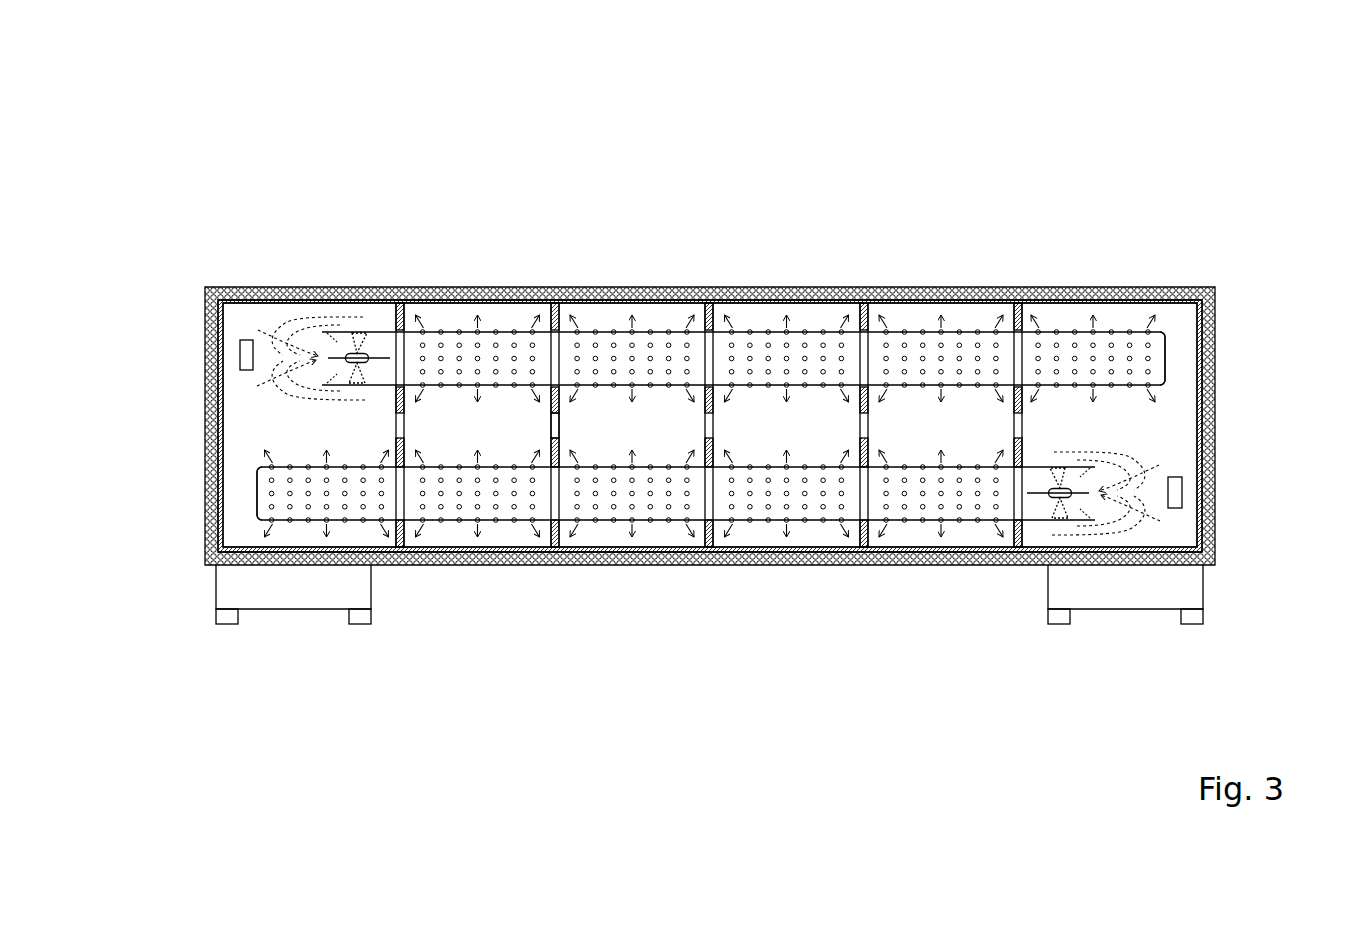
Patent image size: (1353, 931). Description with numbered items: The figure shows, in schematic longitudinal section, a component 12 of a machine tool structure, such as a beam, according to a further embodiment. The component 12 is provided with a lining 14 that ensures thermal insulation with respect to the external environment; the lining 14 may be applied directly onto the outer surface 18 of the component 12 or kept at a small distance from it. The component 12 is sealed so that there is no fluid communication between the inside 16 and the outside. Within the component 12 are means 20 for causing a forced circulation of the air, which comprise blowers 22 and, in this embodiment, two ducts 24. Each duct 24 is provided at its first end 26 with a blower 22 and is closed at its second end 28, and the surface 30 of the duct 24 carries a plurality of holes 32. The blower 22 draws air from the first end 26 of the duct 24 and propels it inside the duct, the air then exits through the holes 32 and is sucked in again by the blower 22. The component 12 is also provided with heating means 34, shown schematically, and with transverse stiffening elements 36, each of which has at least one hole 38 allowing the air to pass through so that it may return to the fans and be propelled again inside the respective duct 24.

The component 12 is at (632, 252).
The lining 14 is at (805, 287).
The inside 16 is at (245, 445).
The outer surface 18 is at (960, 300).
The means for causing forced circulation of air 20 is at (378, 318).
The blower 22 is at (357, 345).
The duct 24 is at (505, 330).
The first end 26 is at (328, 332).
The second end 28 is at (1167, 331).
The surface 30 is at (873, 332).
The holes 32 is at (686, 345).
The heating means 34 is at (240, 352).
The transverse stiffening elements 36 is at (553, 425).
The hole 38 is at (553, 423).